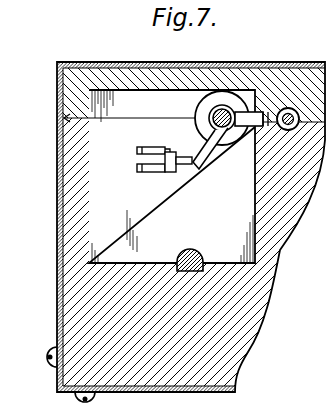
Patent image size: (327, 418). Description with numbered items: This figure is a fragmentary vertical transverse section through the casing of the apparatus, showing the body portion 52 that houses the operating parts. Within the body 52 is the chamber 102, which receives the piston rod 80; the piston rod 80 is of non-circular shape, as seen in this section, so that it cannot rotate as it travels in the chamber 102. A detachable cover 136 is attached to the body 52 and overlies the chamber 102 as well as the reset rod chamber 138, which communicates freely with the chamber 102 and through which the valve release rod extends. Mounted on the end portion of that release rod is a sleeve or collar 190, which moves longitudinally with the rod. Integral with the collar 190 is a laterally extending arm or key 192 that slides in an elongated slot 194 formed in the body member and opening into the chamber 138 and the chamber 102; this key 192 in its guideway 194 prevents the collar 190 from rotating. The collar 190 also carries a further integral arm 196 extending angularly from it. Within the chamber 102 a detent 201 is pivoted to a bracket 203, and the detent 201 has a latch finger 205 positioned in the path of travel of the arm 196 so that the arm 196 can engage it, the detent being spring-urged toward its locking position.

The body portion 52 is at (243, 358).
The piston rod 80 is at (190, 256).
The chamber 102 is at (100, 161).
The detachable cover 136 is at (118, 78).
The reset rod chamber 138 is at (197, 110).
The sleeve or collar 190 is at (232, 112).
The arm or key 192 is at (249, 128).
The elongated slot 194 is at (281, 109).
The arm 196 is at (197, 153).
The detent 201 is at (165, 173).
The bracket 203 is at (149, 152).
The latch finger 205 is at (192, 167).